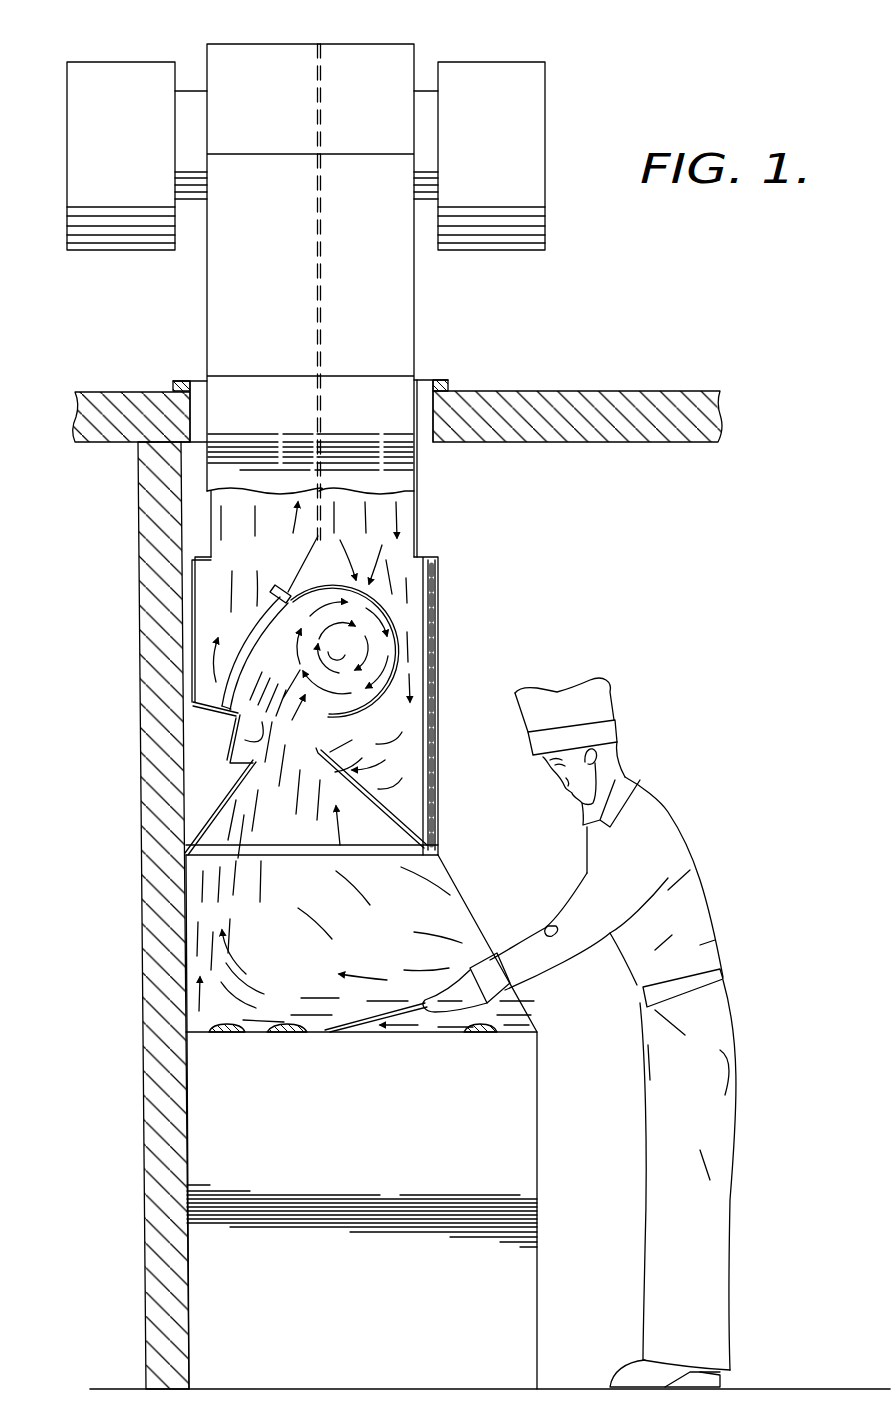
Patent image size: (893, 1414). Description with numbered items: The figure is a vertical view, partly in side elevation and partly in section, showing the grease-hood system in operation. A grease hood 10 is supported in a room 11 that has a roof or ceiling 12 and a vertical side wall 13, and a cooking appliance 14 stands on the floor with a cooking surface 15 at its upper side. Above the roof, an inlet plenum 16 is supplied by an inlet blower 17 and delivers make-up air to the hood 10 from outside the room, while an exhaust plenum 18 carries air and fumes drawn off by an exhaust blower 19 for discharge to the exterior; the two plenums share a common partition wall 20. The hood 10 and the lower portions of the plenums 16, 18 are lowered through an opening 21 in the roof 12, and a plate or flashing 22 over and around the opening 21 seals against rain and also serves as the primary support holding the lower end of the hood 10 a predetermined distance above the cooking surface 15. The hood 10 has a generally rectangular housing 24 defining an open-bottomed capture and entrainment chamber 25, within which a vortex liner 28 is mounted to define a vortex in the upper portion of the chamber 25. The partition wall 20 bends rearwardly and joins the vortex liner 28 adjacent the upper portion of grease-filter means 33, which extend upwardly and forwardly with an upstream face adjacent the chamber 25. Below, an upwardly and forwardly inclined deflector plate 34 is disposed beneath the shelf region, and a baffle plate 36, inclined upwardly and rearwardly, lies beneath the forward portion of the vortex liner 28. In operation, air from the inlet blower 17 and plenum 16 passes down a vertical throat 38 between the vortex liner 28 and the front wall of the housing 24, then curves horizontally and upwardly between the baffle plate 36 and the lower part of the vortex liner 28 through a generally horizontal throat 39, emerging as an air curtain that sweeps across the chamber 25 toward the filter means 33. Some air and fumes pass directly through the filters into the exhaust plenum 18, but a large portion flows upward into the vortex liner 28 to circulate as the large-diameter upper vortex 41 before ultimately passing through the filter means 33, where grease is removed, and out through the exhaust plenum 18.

The grease hood 10 is at (460, 595).
The room 11 is at (657, 545).
The roof or ceiling 12 is at (660, 385).
The vertical side wall 13 is at (151, 622).
The cooking appliance 14 is at (364, 1183).
The cooking surface 15 is at (428, 1027).
The inlet plenum 16 is at (408, 312).
The inlet blower 17 is at (510, 248).
The exhaust plenum 18 is at (217, 308).
The exhaust blower 19 is at (121, 242).
The partition wall 20 is at (323, 294).
The opening 21 is at (203, 421).
The flashing 22 is at (435, 375).
The housing 24 is at (192, 680).
The capture and entrainment chamber 25 is at (304, 717).
The vortex liner 28 is at (362, 584).
The grease-filter means 33 is at (250, 629).
The deflector plate 34 is at (228, 800).
The baffle plate 36 is at (370, 814).
The vertical throat 38 is at (420, 667).
The horizontal throat 39 is at (374, 756).
The upper vortex 41 is at (357, 650).